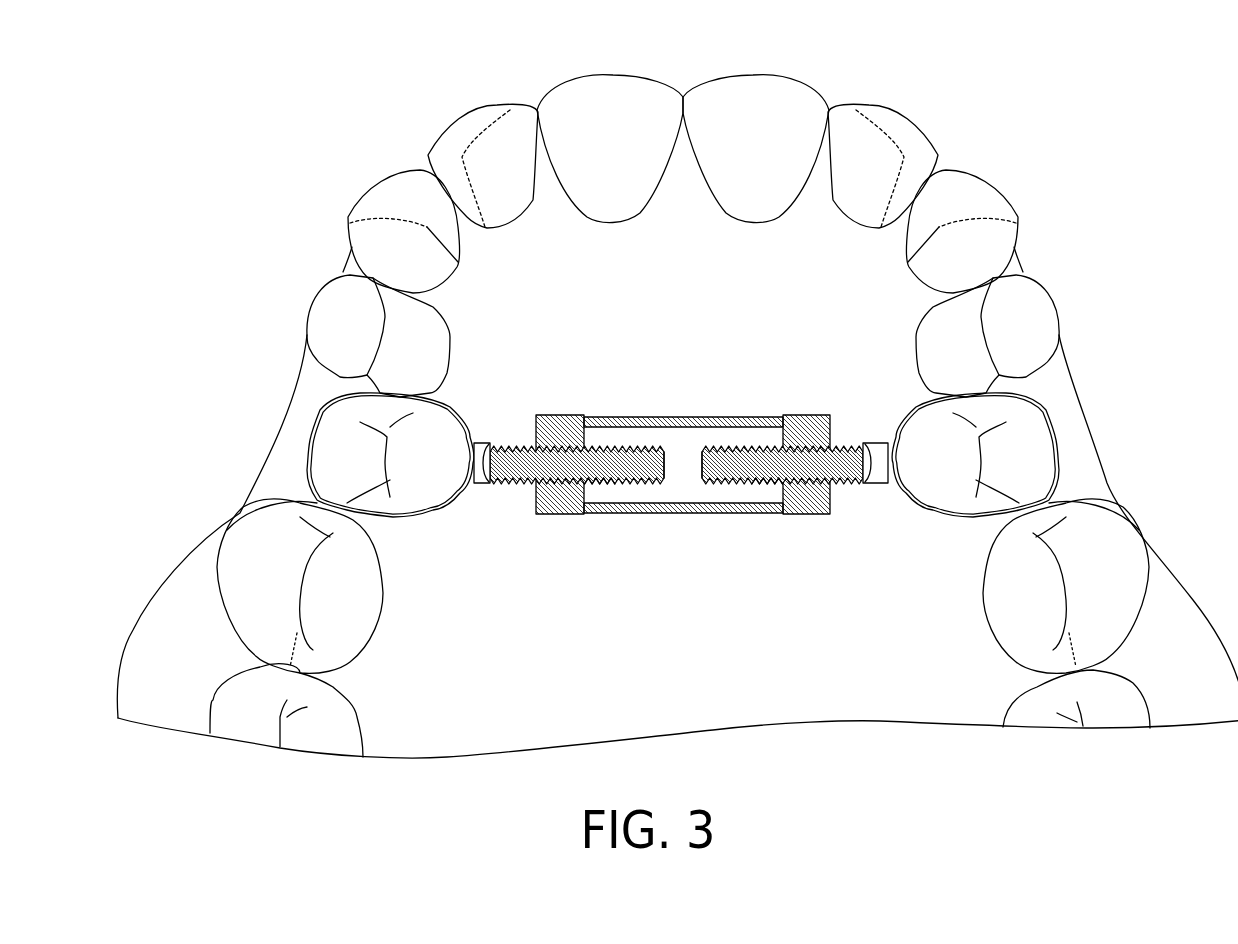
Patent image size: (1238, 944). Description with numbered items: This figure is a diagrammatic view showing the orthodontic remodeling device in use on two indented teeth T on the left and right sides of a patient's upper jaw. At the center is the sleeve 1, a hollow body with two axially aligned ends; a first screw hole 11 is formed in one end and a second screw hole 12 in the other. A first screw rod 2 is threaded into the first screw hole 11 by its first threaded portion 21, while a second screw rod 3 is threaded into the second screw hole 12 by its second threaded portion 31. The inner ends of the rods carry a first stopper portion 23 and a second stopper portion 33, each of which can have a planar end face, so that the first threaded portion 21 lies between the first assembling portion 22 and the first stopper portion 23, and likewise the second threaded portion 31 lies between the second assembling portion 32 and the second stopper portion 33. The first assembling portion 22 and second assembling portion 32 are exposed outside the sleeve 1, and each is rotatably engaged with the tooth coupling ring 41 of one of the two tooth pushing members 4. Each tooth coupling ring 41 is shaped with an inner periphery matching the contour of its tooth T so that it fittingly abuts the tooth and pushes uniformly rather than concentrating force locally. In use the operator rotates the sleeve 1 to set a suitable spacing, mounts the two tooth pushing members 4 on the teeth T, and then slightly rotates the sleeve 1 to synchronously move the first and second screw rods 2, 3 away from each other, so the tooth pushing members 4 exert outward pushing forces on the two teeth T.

The sleeve 1 is at (652, 418).
The first screw hole 11 is at (816, 445).
The second screw hole 12 is at (550, 445).
The first screw rod 2 is at (803, 473).
The first threaded portion 21 is at (766, 487).
The first assembling portion 22 is at (884, 490).
The first stopper portion 23 is at (703, 487).
The second screw rod 3 is at (561, 468).
The second threaded portion 31 is at (599, 487).
The second assembling portion 32 is at (480, 486).
The second stopper portion 33 is at (661, 487).
The tooth pushing member 4 is at (318, 398).
The tooth coupling ring 41 is at (315, 428).
The tooth T is at (325, 467).